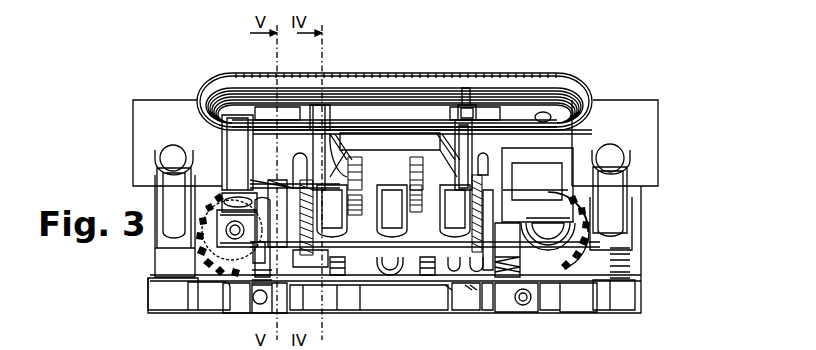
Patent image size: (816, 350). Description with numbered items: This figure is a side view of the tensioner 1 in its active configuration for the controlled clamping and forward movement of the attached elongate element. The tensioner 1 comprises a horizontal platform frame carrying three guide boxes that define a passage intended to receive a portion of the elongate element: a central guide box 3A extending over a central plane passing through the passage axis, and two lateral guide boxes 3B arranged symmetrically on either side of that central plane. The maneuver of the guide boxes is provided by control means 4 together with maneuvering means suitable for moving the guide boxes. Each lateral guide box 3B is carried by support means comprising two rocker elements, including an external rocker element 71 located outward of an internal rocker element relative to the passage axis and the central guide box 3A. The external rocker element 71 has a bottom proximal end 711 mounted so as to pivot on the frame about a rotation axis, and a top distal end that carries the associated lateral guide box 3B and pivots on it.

The tensioner 1 is at (680, 215).
The central guide box 3A is at (200, 251).
The lateral guide box 3B is at (432, 78).
The control means 4 is at (538, 180).
The external rocker element 71 is at (462, 147).
The bottom proximal end 711 is at (465, 90).